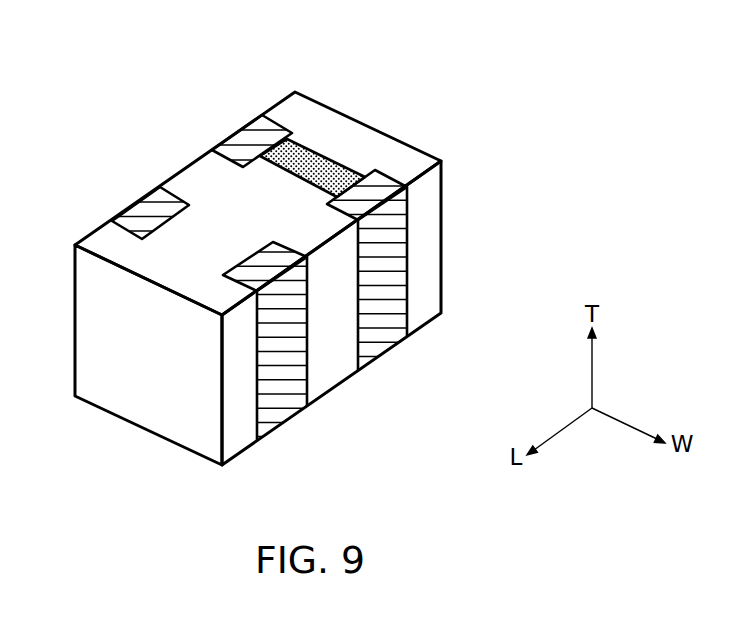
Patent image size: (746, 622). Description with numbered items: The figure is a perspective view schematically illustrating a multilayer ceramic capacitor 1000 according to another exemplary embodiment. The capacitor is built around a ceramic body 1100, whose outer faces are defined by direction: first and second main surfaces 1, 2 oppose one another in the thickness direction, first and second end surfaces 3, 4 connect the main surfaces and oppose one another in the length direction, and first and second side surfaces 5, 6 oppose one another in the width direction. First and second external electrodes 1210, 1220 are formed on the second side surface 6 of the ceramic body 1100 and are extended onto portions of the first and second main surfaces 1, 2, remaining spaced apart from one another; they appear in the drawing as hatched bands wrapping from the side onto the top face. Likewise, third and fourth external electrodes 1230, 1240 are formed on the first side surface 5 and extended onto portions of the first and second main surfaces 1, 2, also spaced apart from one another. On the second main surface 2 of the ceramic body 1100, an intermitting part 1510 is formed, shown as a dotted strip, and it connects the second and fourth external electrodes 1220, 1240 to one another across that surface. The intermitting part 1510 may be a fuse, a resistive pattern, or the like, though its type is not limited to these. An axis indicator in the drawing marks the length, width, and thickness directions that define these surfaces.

The multilayer ceramic capacitor 1000 is at (95, 28).
The ceramic body 1100 is at (101, 247).
The first main surface 1 is at (328, 354).
The second main surface 2 is at (217, 198).
The first end surface 3 is at (142, 383).
The second end surface 4 is at (380, 160).
The first side surface 5 is at (102, 298).
The second side surface 6 is at (337, 294).
The first external electrode 1210 is at (285, 410).
The second external electrode 1220 is at (388, 340).
The third external electrode 1230 is at (143, 213).
The fourth external electrode 1240 is at (245, 144).
The intermitting part 1510 is at (313, 161).